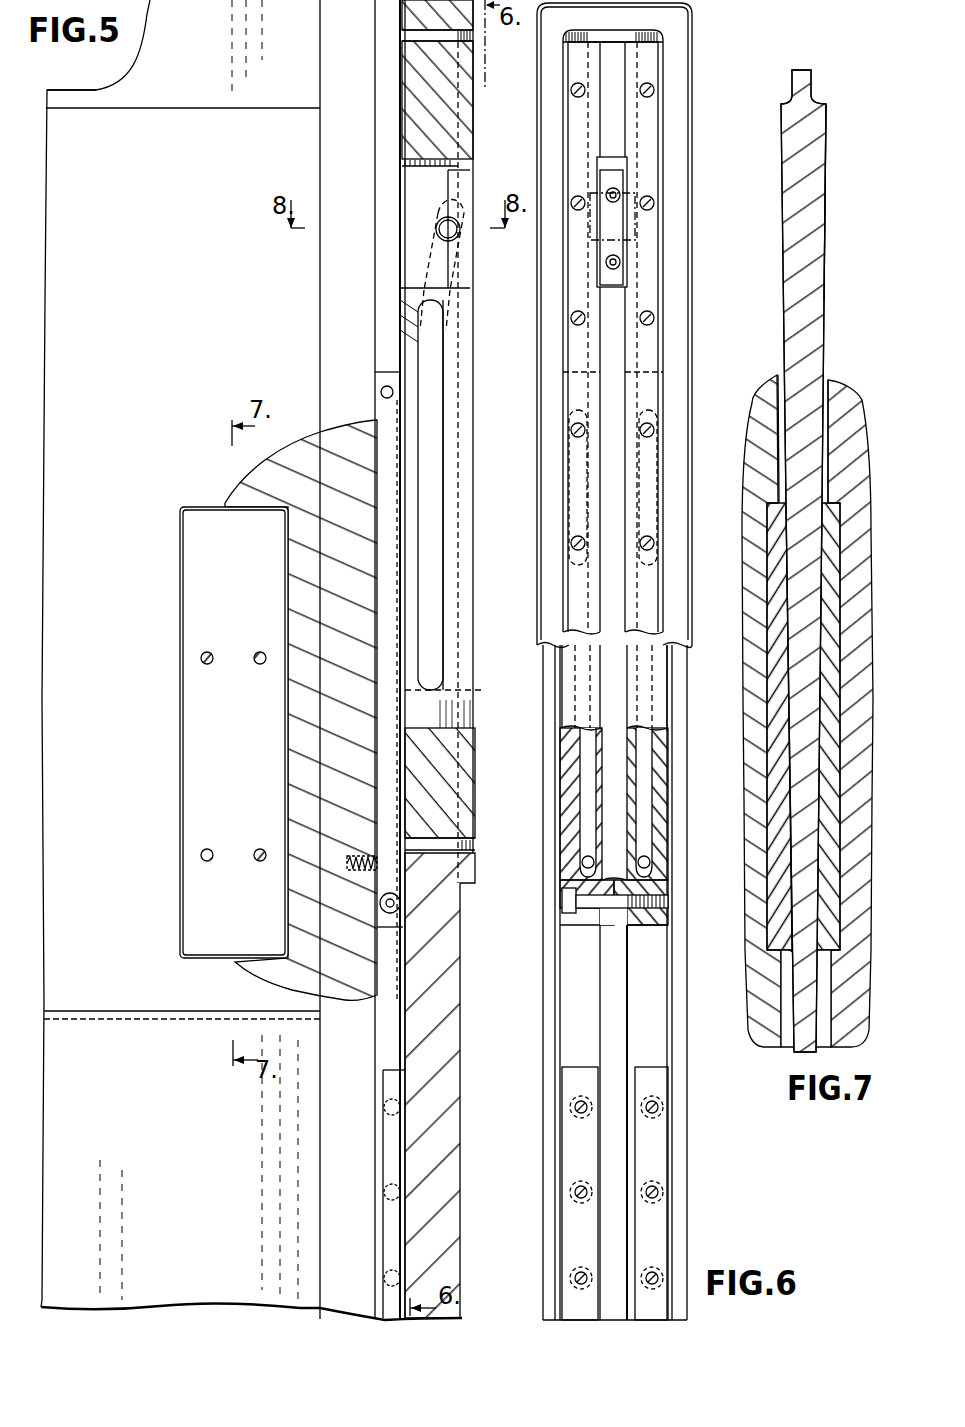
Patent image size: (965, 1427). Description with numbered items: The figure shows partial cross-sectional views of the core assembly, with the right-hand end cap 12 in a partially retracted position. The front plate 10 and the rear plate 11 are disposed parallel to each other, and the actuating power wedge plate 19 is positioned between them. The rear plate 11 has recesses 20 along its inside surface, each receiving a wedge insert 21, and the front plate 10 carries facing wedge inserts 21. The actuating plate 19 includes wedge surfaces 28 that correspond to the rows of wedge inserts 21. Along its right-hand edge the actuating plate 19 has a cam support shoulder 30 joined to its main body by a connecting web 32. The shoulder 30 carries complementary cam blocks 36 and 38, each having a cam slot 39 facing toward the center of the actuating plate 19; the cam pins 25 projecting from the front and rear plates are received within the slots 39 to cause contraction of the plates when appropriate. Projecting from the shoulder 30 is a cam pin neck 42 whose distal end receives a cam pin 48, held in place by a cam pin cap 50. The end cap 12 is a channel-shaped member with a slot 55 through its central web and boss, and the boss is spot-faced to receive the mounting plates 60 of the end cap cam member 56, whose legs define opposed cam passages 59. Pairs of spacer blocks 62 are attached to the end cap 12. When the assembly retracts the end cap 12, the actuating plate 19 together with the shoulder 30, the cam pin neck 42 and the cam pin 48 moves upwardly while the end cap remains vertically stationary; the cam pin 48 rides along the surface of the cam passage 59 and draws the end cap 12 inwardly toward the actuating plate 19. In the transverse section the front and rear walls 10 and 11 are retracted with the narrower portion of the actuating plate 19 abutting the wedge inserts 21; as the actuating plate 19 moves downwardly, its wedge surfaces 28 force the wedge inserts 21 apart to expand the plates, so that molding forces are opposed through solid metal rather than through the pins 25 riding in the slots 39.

In FIG. 7, the front plate 10 is at (744, 470).
In FIG. 7, the rear plate 11 is at (850, 404).
In FIG. 5, the right-hand end cap 12 is at (466, 1022).
In FIG. 5, the actuating power wedge plate 19 is at (78, 82).
In FIG. 6, the actuating power wedge plate 19 is at (631, 1010).
In FIG. 7, the actuating power wedge plate 19 is at (829, 142).
In FIG. 7, the recesses 20 is at (772, 542).
In FIG. 5, the wedge insert 21 is at (192, 690).
In FIG. 7, the wedge insert 21 is at (782, 606).
In FIG. 5, the rear plate cam pins 25 is at (346, 863).
In FIG. 6, the rear plate cam pins 25 is at (582, 860).
In FIG. 5, the wedge surfaces 28 is at (180, 654).
In FIG. 7, the wedge surfaces 28 is at (827, 168).
In FIG. 5, the cam support shoulder 30 is at (382, 55).
In FIG. 5, the connecting web 32 is at (324, 281).
In FIG. 6, the cam block 36 is at (652, 928).
In FIG. 5, the cam block 38 is at (382, 395).
In FIG. 6, the cam block 38 is at (568, 702).
In FIG. 5, the cam slot 39 is at (405, 722).
In FIG. 6, the cam slot 39 is at (584, 776).
In FIG. 5, the cam pin neck 42 is at (418, 202).
In FIG. 5, the cam pin 48 is at (452, 231).
In FIG. 6, the cam pin 48 is at (650, 238).
In FIG. 5, the cam pin cap 50 is at (462, 188).
In FIG. 6, the slot 55 is at (617, 162).
In FIG. 6, the end cap cam member 56 is at (664, 84).
In FIG. 5, the cam passage 59 is at (440, 408).
In FIG. 6, the mounting plates 60 is at (613, 324).
In FIG. 5, the spacer blocks 62 is at (392, 1172).
In FIG. 6, the spacer blocks 62 is at (585, 1074).